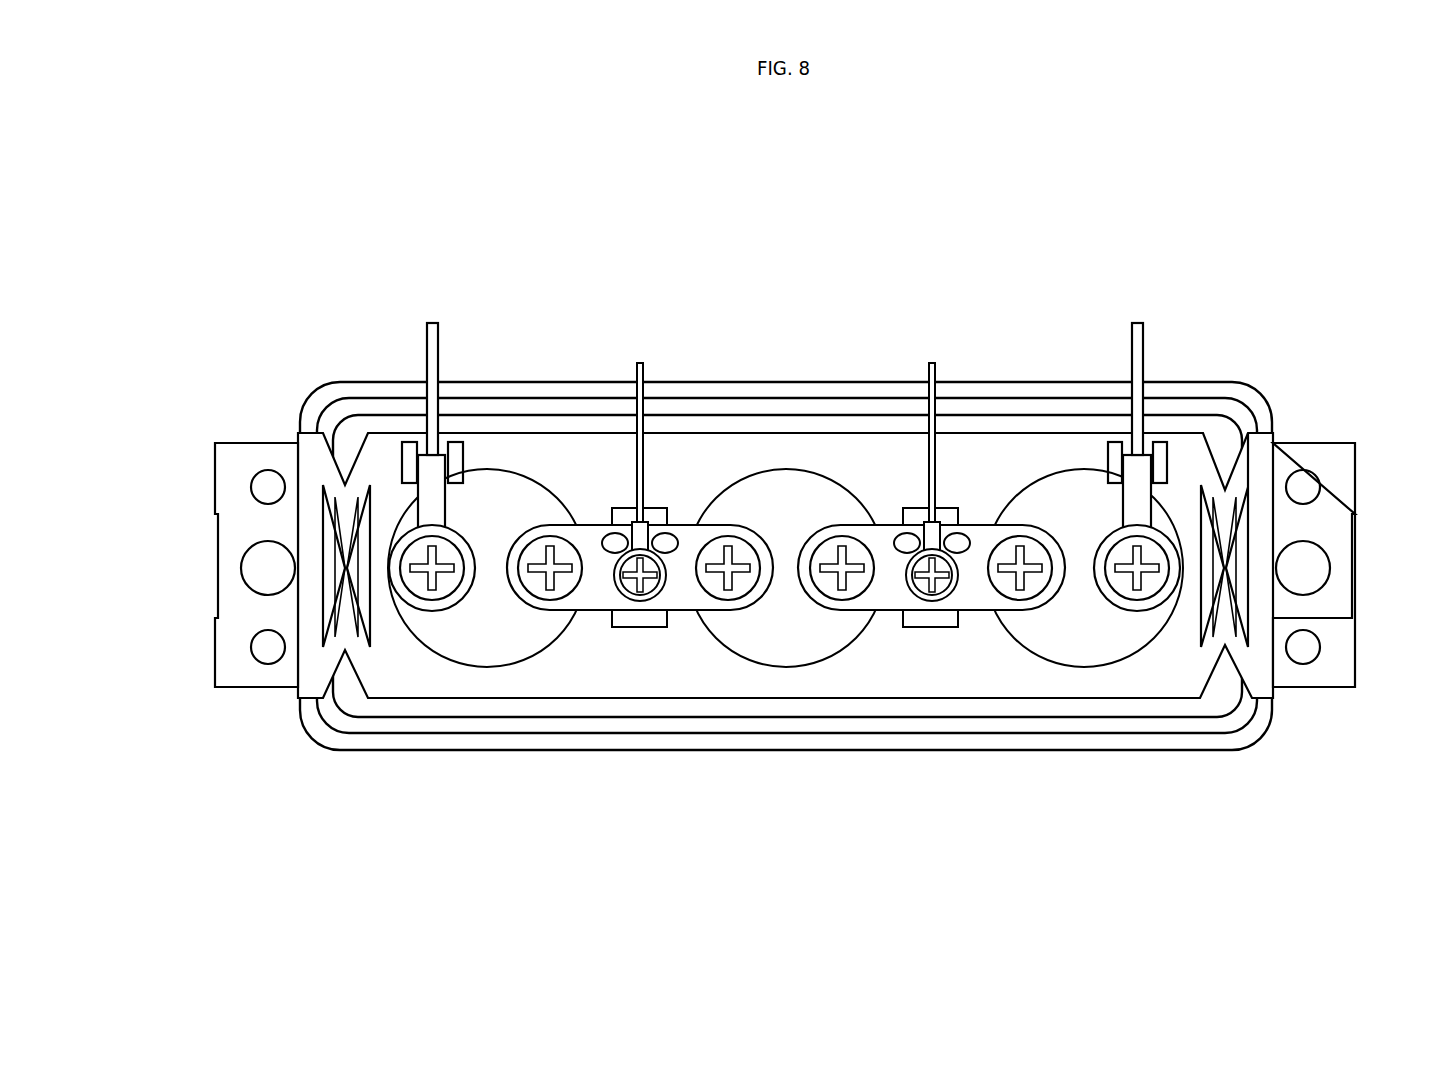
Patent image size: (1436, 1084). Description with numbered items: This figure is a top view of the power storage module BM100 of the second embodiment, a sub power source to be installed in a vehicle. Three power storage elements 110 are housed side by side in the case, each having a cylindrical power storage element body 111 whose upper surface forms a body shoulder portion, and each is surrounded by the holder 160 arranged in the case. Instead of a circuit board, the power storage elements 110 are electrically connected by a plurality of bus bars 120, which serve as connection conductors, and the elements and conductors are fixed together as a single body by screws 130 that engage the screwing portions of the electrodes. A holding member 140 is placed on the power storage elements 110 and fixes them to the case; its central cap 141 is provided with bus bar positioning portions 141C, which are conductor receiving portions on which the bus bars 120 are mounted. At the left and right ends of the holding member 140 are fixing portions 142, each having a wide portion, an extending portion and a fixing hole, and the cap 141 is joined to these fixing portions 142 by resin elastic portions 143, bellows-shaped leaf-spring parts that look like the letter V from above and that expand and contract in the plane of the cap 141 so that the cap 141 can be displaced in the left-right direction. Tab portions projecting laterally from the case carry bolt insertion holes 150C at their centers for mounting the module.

The power storage module BM100 is at (1053, 125).
The power storage element 110 is at (785, 476).
The power storage element body 111 is at (792, 510).
The bus bar 120 is at (786, 562).
The screw 130 is at (1005, 583).
The holding member 140 is at (784, 434).
The cap 141 is at (567, 452).
The bus bar positioning portion 141C is at (623, 618).
The fixing portion 142 is at (785, 519).
The resin elastic portion 143 is at (345, 482).
The bolt insertion hole 150C is at (247, 460).
The holder 160 is at (1228, 413).